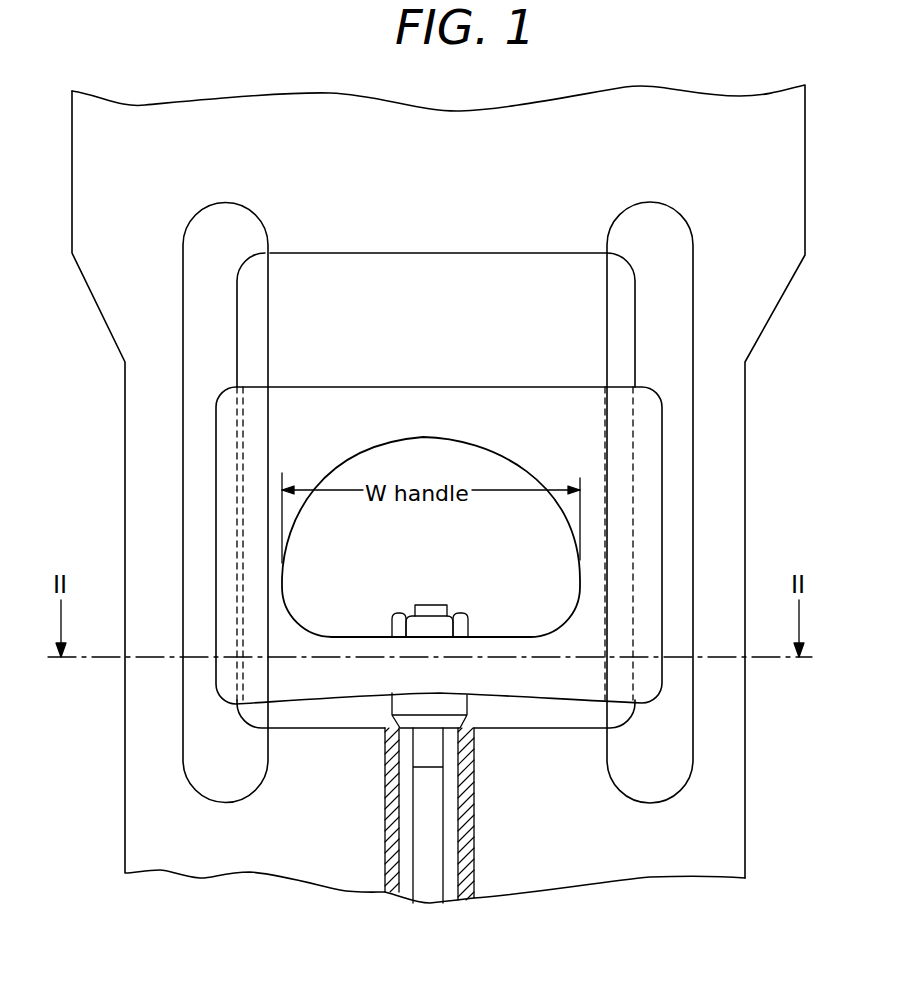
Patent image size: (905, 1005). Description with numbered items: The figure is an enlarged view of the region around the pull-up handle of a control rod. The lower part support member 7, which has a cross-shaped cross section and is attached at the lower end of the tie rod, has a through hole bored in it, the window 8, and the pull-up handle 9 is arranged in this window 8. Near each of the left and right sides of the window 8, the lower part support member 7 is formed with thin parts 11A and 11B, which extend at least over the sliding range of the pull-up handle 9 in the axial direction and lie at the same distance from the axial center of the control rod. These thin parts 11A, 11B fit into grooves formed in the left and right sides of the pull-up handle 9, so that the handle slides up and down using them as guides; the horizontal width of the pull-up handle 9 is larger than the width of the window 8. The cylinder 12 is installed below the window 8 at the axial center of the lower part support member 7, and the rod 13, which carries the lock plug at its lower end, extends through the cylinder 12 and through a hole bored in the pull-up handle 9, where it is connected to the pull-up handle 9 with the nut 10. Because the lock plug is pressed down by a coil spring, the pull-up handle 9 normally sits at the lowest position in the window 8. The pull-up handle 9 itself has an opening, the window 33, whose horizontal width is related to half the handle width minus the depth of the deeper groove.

The lower part support member 7 is at (790, 232).
The window 8 is at (515, 270).
The pull-up handle 9 is at (655, 505).
The nut 10 is at (455, 617).
The thin part 11A is at (222, 280).
The thin part 11B is at (636, 305).
The cylinder 12 is at (478, 860).
The rod 13 is at (400, 870).
The window 33 is at (332, 607).